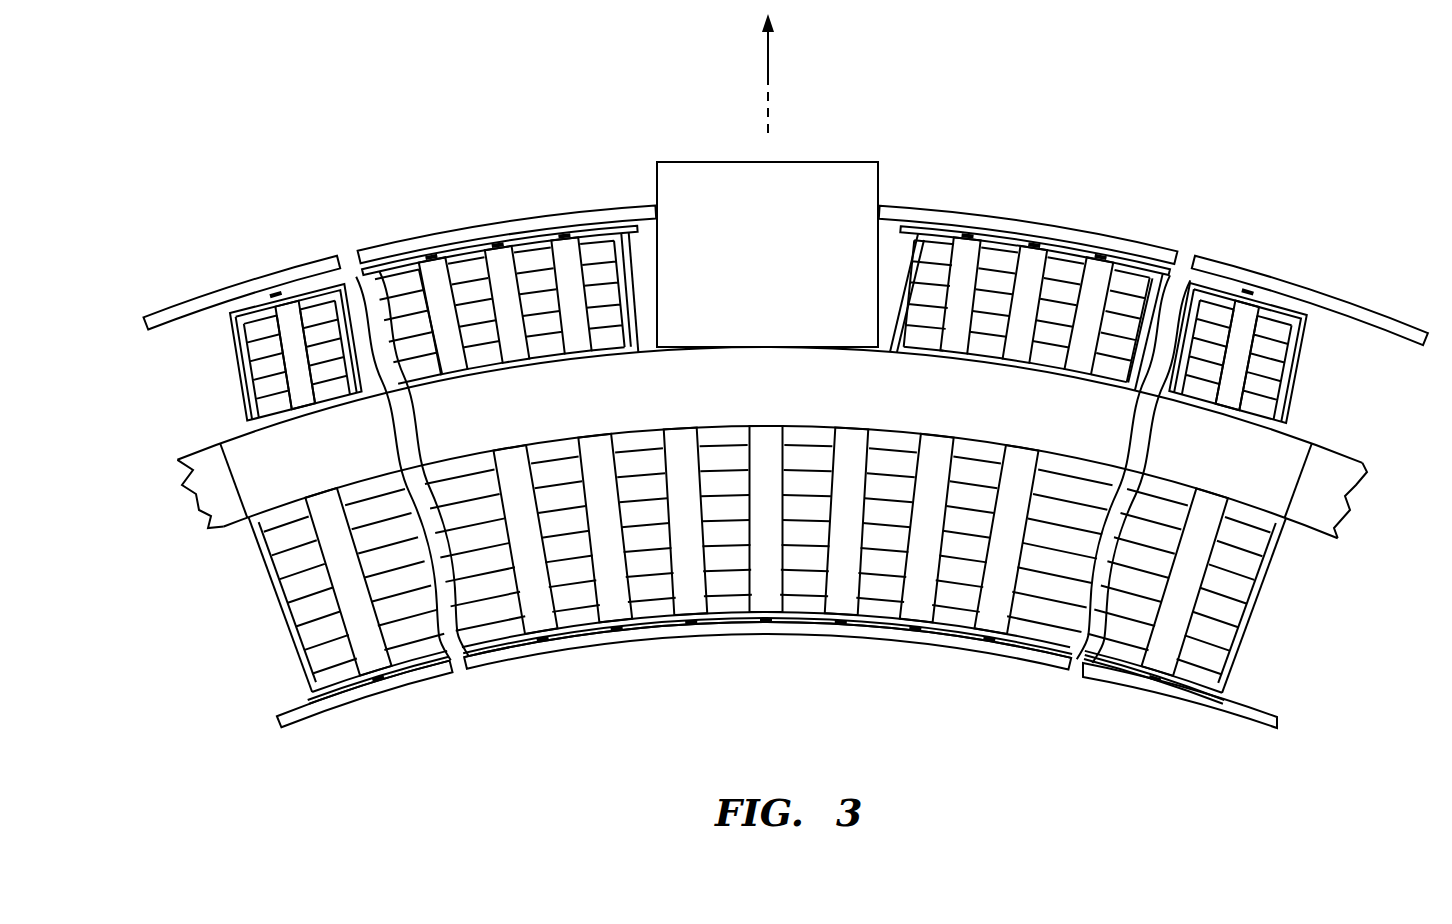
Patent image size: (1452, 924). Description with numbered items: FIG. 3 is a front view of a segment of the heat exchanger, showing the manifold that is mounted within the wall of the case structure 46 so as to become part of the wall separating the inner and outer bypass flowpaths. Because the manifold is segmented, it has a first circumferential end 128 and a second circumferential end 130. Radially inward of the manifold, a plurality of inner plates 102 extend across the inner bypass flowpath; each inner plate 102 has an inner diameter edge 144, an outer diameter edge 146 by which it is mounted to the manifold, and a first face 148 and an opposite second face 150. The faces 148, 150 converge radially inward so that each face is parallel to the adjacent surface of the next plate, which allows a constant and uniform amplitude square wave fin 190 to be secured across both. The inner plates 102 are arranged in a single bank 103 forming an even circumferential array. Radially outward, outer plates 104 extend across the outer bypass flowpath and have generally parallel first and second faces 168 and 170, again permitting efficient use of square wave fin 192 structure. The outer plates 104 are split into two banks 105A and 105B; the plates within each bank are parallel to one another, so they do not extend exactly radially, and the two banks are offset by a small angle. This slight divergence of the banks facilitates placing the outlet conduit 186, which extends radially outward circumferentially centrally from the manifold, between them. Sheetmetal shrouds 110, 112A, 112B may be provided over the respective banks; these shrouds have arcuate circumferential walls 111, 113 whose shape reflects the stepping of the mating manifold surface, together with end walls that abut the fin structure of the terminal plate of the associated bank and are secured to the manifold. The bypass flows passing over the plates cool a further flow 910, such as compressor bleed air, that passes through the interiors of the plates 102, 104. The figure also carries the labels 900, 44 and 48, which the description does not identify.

The further flow 910 is at (770, 47).
The reference axis 900 is at (769, 132).
The outlet conduit 186 is at (862, 190).
The outer ring 44 is at (1281, 292).
The outer plate bank 105A is at (476, 244).
The outer plate bank 105B is at (1088, 245).
The shroud circumferential wall 113 is at (397, 268).
The outer plate 104 is at (562, 260).
The square wave fin 192 is at (1134, 298).
The shroud 112A is at (216, 317).
The shroud 112B is at (1318, 367).
The first face 168 is at (258, 326).
The second face 170 is at (308, 300).
The case structure 46 is at (205, 452).
The first circumferential end 128 is at (226, 520).
The second circumferential end 130 is at (1307, 481).
The outer diameter edge 146 is at (769, 550).
The inner plate 102 is at (611, 606).
The first face 148 is at (334, 621).
The second face 150 is at (387, 610).
The shroud 110 is at (1237, 614).
The square wave fin 190 is at (1124, 660).
The inner plate bank 103 is at (764, 634).
The inner diameter edge 144 is at (1000, 634).
The inner ring 48 is at (928, 636).
The shroud circumferential wall 111 is at (1190, 697).